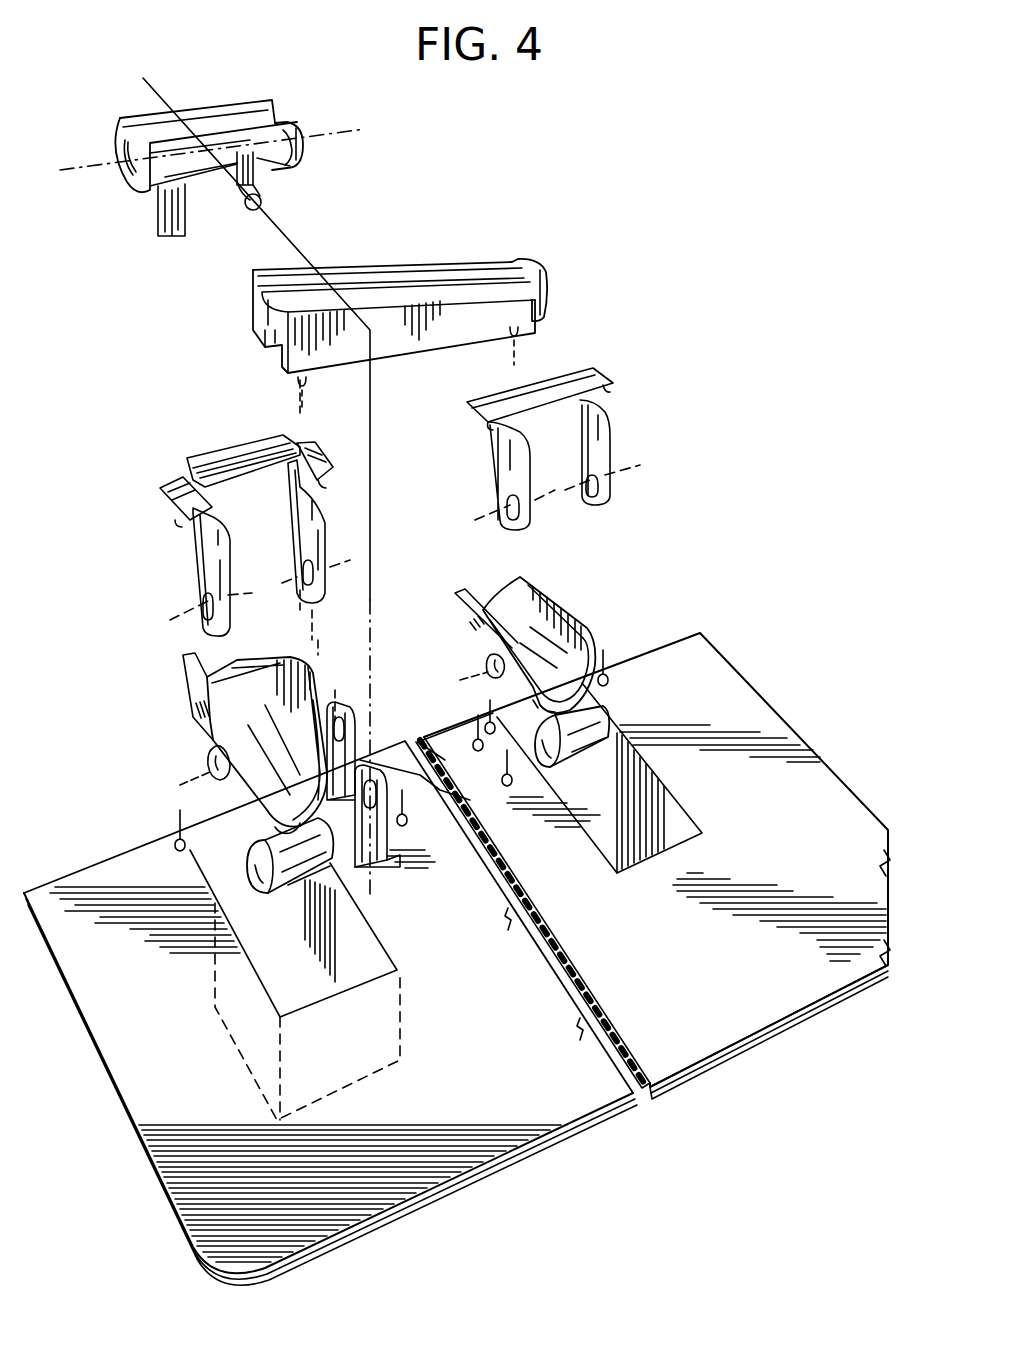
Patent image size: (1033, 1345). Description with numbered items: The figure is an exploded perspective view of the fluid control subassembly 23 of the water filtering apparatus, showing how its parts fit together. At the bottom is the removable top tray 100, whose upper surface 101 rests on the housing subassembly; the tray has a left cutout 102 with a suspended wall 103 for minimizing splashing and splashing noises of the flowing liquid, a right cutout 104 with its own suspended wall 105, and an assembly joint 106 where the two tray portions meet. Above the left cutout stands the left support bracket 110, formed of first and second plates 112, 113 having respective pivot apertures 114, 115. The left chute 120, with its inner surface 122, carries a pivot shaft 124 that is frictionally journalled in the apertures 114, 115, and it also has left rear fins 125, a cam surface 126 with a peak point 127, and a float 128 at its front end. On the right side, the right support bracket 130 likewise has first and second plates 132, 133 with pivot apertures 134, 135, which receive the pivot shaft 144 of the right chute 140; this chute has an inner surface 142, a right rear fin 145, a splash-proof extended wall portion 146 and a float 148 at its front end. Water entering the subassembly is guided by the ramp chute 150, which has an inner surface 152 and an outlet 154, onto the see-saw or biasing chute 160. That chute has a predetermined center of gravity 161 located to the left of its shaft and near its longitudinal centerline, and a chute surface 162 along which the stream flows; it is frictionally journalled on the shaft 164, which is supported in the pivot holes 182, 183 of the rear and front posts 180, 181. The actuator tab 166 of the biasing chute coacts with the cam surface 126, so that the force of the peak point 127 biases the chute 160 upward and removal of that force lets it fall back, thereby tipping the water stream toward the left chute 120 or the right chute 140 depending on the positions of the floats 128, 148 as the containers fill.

The fluid control subassembly 23 is at (147, 266).
The removable top tray 100 is at (194, 1269).
The upper surface 101 is at (420, 1190).
The left cutout 102 is at (302, 997).
The suspended wall 103 is at (365, 964).
The right cutout 104 is at (630, 857).
The suspended wall 105 is at (687, 831).
The assembly joint 106 is at (578, 1120).
The left support bracket 110 is at (165, 487).
The first plate 112 is at (203, 547).
The second plate 113 is at (293, 508).
The pivot aperture 114 is at (210, 595).
The pivot aperture 115 is at (307, 573).
The left chute 120 is at (196, 698).
The inner surface 122 is at (225, 690).
The pivot shaft 124 is at (208, 762).
The left rear fins 125 is at (240, 790).
The cam surface 126 is at (330, 662).
The peak point 127 is at (318, 652).
The float 128 is at (290, 880).
The right support bracket 130 is at (607, 372).
The first plate 132 is at (508, 458).
The second plate 133 is at (610, 425).
The pivot aperture 134 is at (510, 513).
The pivot aperture 135 is at (590, 488).
The right chute 140 is at (565, 605).
The inner surface 142 is at (533, 623).
The pivot shaft 144 is at (488, 665).
The right rear fin 145 is at (490, 690).
The splash-proof extended wall portion 146 is at (613, 628).
The float 148 is at (590, 752).
The ramp chute 150 is at (418, 292).
The inner surface 152 is at (268, 292).
The outlet 154 is at (540, 292).
The biasing chute 160 is at (227, 103).
The center of gravity 161 is at (183, 118).
The chute surface 162 is at (128, 145).
The shaft 164 is at (265, 200).
The actuator tab 166 is at (170, 222).
The rear post 180 is at (348, 757).
The front post 181 is at (402, 862).
The pivot hole 182 is at (352, 718).
The pivot hole 183 is at (400, 755).